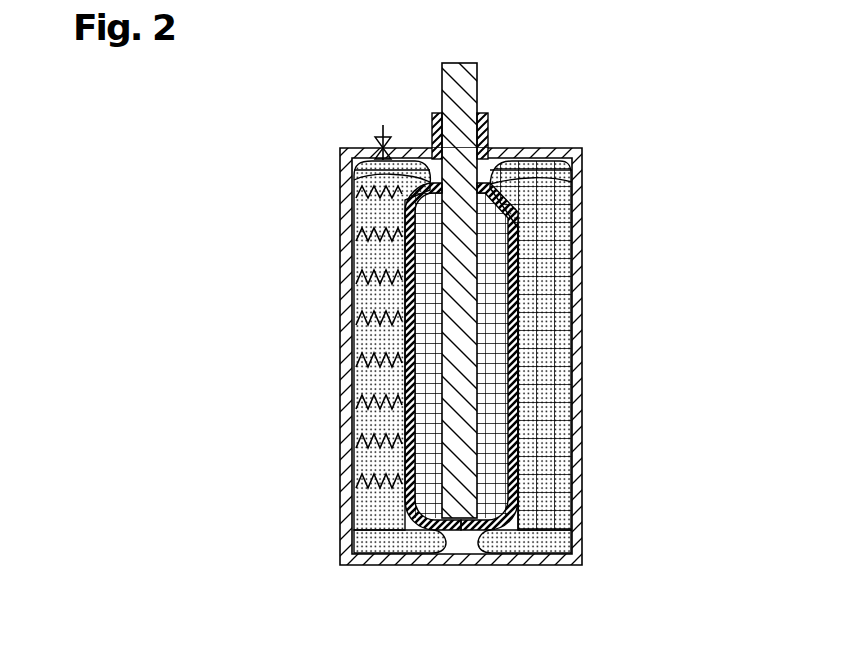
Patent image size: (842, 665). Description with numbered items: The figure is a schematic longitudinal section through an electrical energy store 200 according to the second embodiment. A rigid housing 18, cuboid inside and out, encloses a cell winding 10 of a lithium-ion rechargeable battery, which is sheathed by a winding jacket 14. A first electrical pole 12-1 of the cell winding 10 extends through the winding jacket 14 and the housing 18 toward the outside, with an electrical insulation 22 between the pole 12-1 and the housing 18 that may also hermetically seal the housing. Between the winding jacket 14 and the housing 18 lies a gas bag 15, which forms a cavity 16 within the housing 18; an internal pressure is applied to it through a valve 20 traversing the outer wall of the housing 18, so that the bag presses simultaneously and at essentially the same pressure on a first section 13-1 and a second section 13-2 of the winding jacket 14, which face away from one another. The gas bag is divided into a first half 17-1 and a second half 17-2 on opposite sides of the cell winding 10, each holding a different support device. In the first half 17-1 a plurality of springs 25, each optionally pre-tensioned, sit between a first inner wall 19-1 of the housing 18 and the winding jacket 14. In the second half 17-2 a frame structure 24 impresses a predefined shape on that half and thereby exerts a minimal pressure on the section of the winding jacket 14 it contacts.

The electrical energy store 200 is at (172, 139).
The first electrical pole 12-1 is at (460, 80).
The electrical insulation 22 is at (484, 126).
The valve 20 is at (378, 126).
The cavity 16 is at (355, 170).
The gas bag 15 is at (357, 180).
The housing 18 is at (578, 218).
The springs 25 is at (354, 218).
The first section of winding jacket 13-1 is at (400, 297).
The second section of winding jacket 13-2 is at (545, 446).
The first inner wall of housing 19-1 is at (375, 340).
The winding jacket 14 is at (514, 346).
The cell winding 10 is at (493, 390).
The frame structure 24 is at (545, 503).
The first half of gas bag 17-1 is at (398, 546).
The second half of gas bag 17-2 is at (522, 546).